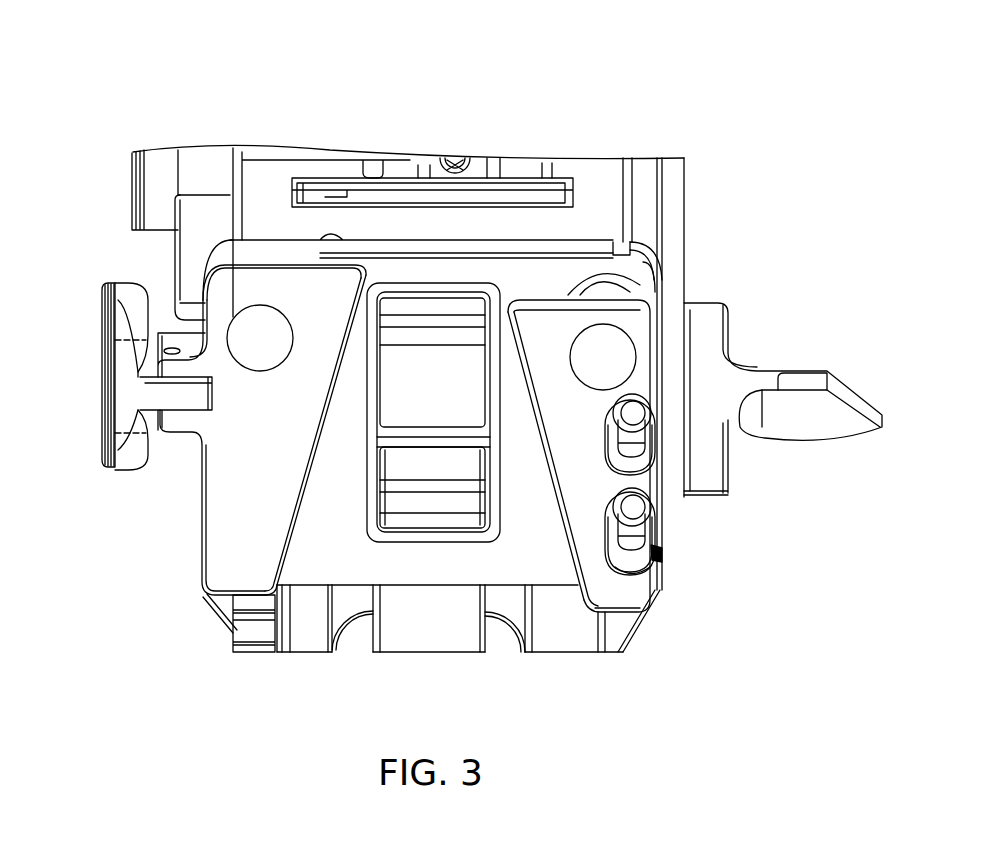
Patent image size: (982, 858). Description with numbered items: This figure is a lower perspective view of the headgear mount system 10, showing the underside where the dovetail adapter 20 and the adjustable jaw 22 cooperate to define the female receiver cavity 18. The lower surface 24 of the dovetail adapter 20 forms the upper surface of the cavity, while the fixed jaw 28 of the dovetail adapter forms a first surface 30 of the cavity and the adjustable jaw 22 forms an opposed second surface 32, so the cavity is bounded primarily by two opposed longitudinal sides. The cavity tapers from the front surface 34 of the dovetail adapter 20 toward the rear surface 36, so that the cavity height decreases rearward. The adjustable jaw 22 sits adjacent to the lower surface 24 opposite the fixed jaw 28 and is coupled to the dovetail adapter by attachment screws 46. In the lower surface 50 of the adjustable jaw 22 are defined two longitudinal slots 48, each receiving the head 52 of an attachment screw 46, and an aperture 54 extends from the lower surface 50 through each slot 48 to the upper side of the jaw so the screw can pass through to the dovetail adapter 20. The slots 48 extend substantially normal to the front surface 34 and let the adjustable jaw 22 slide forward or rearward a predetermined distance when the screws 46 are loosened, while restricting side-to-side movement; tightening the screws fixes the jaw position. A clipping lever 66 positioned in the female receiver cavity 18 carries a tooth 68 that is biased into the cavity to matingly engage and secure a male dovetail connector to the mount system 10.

The headgear mount system 10 is at (100, 100).
The female receiver cavity 18 is at (515, 440).
The dovetail adapter 20 is at (322, 305).
The adjustable jaw 22 is at (647, 350).
The lower surface 24 is at (520, 570).
The fixed jaw 28 is at (213, 540).
The first surface 30 is at (293, 538).
The second surface 32 is at (563, 533).
The front surface 34 is at (212, 625).
The rear surface 36 is at (255, 250).
The attachment screw 46 is at (632, 500).
The slot 48 is at (660, 560).
The lower surface 50 is at (543, 318).
The head 52 is at (640, 420).
The aperture 54 is at (638, 559).
The clipping lever 66 is at (420, 380).
The tooth 68 is at (438, 310).